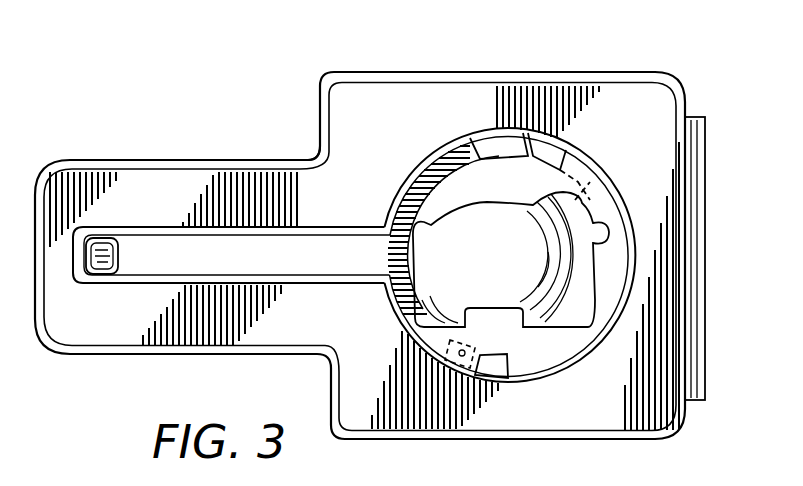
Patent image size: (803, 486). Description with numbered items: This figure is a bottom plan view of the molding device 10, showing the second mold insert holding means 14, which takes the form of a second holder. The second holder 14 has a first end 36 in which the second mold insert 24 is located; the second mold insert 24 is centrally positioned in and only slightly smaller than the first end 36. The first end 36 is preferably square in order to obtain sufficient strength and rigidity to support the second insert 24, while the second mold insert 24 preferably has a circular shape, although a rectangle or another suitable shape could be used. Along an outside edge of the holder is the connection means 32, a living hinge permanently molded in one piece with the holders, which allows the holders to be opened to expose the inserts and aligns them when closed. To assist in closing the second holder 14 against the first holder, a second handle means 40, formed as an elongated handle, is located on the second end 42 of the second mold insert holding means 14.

The molding device 10 is at (694, 46).
The second mold insert holding means 14 is at (314, 146).
The second mold insert 24 is at (582, 332).
The connection means 32 is at (700, 283).
The first end 36 is at (652, 107).
The second handle means 40 is at (182, 160).
The second end 42 is at (97, 322).